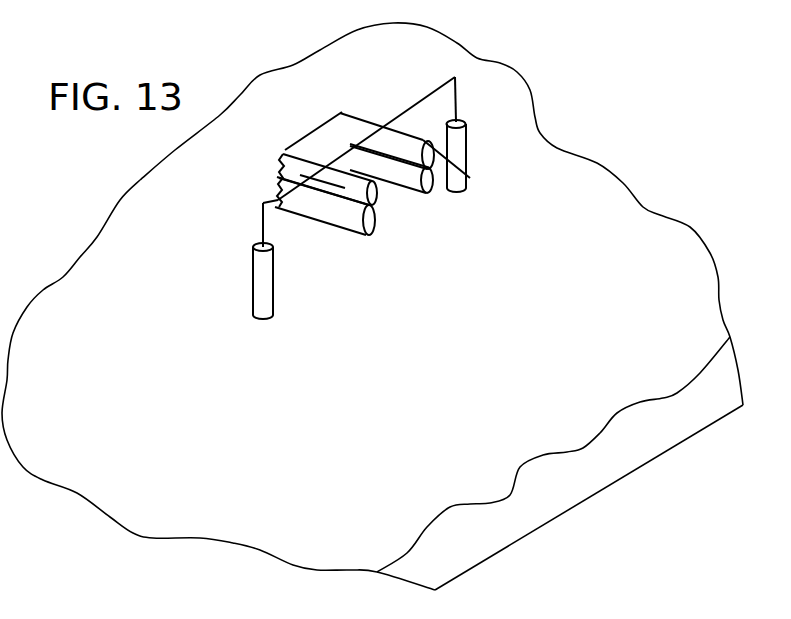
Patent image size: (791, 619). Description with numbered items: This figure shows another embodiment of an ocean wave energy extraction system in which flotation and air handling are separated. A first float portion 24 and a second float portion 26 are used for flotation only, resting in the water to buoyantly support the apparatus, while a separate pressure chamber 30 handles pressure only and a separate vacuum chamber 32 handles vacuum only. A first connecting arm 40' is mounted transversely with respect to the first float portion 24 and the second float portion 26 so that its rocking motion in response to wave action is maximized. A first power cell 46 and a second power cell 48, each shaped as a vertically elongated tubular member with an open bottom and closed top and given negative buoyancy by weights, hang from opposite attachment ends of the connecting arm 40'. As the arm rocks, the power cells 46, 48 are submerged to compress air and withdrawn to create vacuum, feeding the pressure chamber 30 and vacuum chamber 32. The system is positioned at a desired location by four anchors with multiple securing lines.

The first float portion 24 is at (430, 188).
The second float portion 26 is at (366, 232).
The pressure chamber 30 is at (358, 130).
The vacuum chamber 32 is at (323, 183).
The first connecting arm 40' is at (374, 122).
The first power cell 46 is at (252, 252).
The second power cell 48 is at (467, 142).